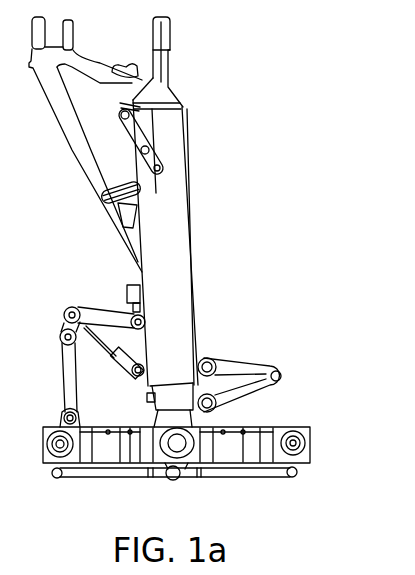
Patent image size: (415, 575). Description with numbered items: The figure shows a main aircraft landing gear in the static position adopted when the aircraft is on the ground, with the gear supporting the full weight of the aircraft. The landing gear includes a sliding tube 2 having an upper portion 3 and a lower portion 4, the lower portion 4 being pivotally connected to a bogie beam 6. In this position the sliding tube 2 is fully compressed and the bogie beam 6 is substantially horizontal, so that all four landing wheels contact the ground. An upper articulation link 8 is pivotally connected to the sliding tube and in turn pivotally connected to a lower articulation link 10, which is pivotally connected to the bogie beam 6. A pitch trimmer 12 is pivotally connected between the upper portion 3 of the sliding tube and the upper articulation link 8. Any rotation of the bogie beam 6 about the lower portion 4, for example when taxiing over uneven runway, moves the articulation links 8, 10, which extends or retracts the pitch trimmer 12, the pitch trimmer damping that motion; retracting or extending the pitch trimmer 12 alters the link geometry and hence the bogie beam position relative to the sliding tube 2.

The sliding tube 2 is at (220, 108).
The upper portion of the sliding tube 3 is at (198, 352).
The lower portion of the sliding tube 4 is at (146, 398).
The bogie beam 6 is at (245, 447).
The upper articulation link 8 is at (107, 317).
The lower articulation link 10 is at (65, 380).
The pitch trimmer 12 is at (122, 367).